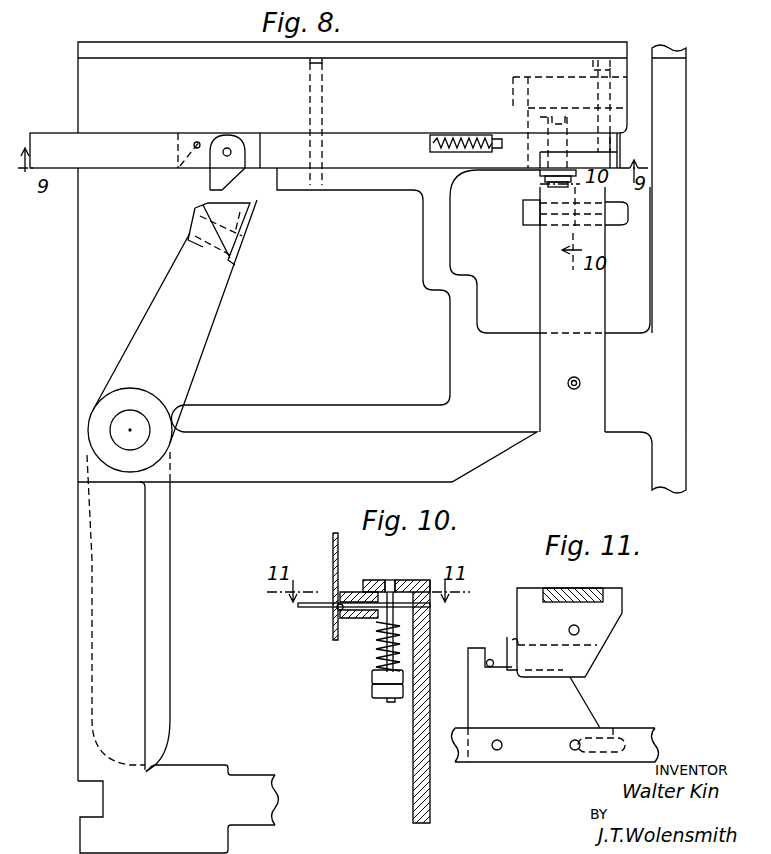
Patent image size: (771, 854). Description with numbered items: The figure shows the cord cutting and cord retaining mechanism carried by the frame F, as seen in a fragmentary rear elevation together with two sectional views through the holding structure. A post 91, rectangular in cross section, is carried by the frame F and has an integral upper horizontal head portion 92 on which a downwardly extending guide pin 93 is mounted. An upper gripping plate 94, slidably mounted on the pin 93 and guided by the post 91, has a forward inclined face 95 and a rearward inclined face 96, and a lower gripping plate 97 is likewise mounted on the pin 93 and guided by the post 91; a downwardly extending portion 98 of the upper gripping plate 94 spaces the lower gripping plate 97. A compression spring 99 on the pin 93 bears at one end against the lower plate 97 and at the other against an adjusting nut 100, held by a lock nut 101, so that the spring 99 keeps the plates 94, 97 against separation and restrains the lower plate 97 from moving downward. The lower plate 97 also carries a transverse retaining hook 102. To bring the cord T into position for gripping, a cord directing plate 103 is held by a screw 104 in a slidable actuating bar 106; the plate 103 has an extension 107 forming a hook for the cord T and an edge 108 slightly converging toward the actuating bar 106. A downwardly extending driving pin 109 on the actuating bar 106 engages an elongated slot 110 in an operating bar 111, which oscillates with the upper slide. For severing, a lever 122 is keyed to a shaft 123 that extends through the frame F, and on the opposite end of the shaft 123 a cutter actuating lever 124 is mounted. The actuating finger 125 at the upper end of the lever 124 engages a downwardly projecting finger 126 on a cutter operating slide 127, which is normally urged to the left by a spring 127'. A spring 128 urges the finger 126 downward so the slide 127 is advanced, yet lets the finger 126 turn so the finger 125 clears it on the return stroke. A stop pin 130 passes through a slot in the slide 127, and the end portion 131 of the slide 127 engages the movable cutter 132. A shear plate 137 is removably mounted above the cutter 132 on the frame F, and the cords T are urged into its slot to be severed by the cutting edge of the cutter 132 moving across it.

In FIG. 8, the frame F is at (682, 292).
In FIG. 10, the cord T is at (333, 545).
In FIG. 11, the cord T is at (495, 660).
In FIG. 8, the post 91 is at (596, 366).
In FIG. 10, the post 91 is at (430, 655).
In FIG. 11, the post 91 is at (590, 588).
In FIG. 8, the head portion 92 is at (598, 193).
In FIG. 10, the head portion 92 is at (372, 580).
In FIG. 10, the guide pin 93 is at (373, 645).
In FIG. 11, the guide pin 93 is at (580, 630).
In FIG. 8, the upper gripping plate 94 is at (624, 207).
In FIG. 10, the upper gripping plate 94 is at (408, 562).
In FIG. 11, the upper gripping plate 94 is at (612, 612).
In FIG. 11, the forward inclined face 95 is at (523, 672).
In FIG. 11, the rearward inclined face 96 is at (598, 663).
In FIG. 8, the lower gripping plate 97 is at (624, 226).
In FIG. 10, the lower gripping plate 97 is at (355, 620).
In FIG. 10, the downwardly extending portion 98 is at (385, 590).
In FIG. 10, the compression spring 99 is at (375, 662).
In FIG. 10, the adjusting nut 100 is at (373, 673).
In FIG. 10, the lock nut 101 is at (375, 693).
In FIG. 10, the retaining hook 102 is at (333, 613).
In FIG. 11, the retaining hook 102 is at (537, 676).
In FIG. 10, the cord directing plate 103 is at (325, 600).
In FIG. 11, the cord directing plate 103 is at (476, 712).
In FIG. 11, the screw 104 is at (497, 750).
In FIG. 11, the actuating bar 106 is at (560, 756).
In FIG. 11, the extension 107 is at (488, 660).
In FIG. 11, the edge 108 is at (512, 640).
In FIG. 11, the driving pin 109 is at (573, 740).
In FIG. 11, the elongated slot 110 is at (613, 728).
In FIG. 11, the operating bar 111 is at (655, 742).
In FIG. 8, the lever 122 is at (170, 597).
In FIG. 8, the shaft 123 is at (117, 427).
In FIG. 8, the cutter actuating lever 124 is at (198, 350).
In FIG. 8, the actuating finger 125 is at (258, 200).
In FIG. 8, the finger 126 is at (238, 137).
In FIG. 8, the cutter operating slide 127 is at (384, 124).
In FIG. 8, the spring 127' is at (463, 133).
In FIG. 8, the spring 128 is at (203, 150).
In FIG. 8, the stop pin 130 is at (325, 102).
In FIG. 8, the end portion 131 is at (527, 165).
In FIG. 8, the movable cutter 132 is at (610, 158).
In FIG. 8, the shear plate 137 is at (612, 143).